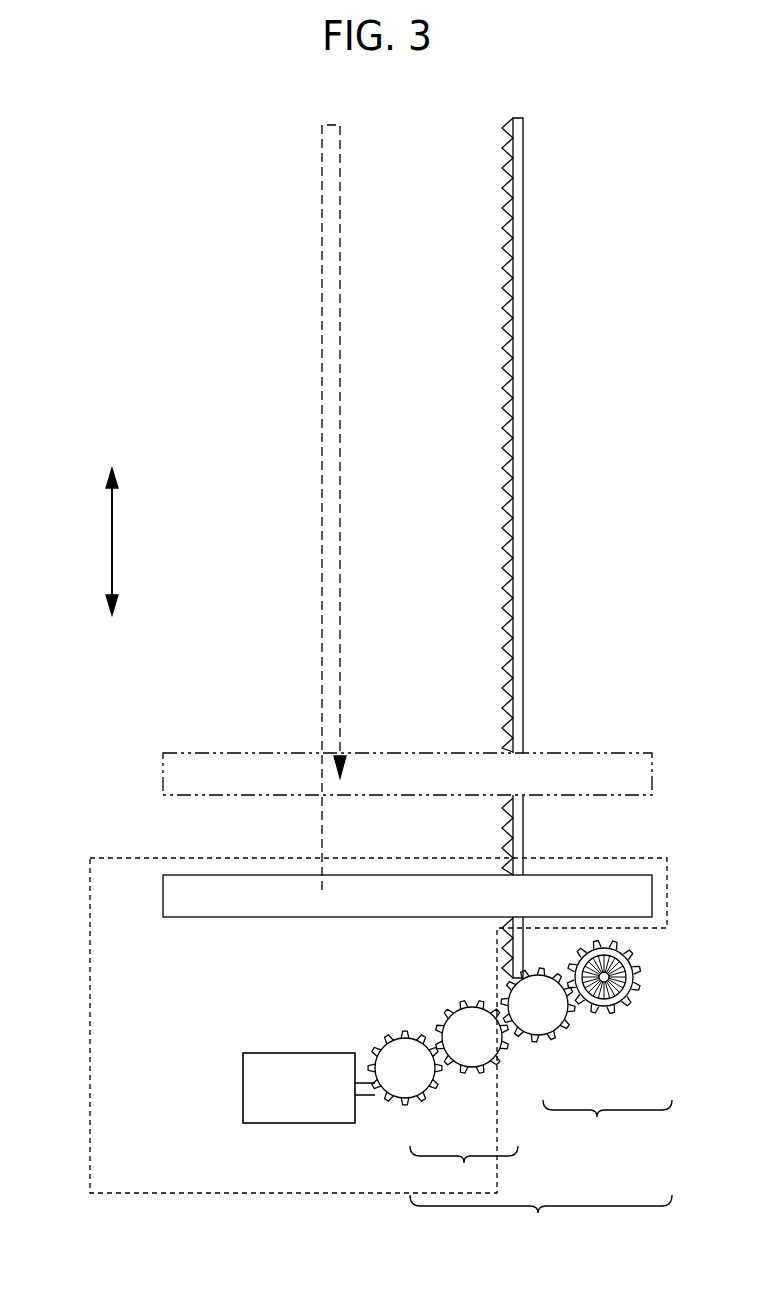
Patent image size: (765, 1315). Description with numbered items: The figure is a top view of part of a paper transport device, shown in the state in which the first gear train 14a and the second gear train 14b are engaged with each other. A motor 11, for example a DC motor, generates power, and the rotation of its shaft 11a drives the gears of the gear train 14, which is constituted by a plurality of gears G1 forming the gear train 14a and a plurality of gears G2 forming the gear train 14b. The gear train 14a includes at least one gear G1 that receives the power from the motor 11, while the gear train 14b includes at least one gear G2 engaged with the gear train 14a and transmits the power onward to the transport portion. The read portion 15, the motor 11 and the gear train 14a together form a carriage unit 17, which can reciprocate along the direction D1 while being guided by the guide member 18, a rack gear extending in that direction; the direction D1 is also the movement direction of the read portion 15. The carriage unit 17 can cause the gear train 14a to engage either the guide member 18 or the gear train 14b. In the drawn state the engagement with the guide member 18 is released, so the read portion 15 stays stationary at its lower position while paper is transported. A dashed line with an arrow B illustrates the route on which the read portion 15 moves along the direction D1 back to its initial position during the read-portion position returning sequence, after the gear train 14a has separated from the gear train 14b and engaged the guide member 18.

The motor 11 is at (250, 1083).
The shaft 11a is at (360, 1094).
The gear train 14 is at (541, 1219).
The first gear train 14a is at (464, 1166).
The second gear train 14b is at (607, 1124).
The read portion 15 is at (168, 772).
The carriage unit 17 is at (90, 1013).
The guide member 18 is at (523, 522).
The gear G1 is at (466, 1068).
The gear G2 is at (538, 1034).
The direction D1 is at (93, 541).
The arrow B is at (341, 507).